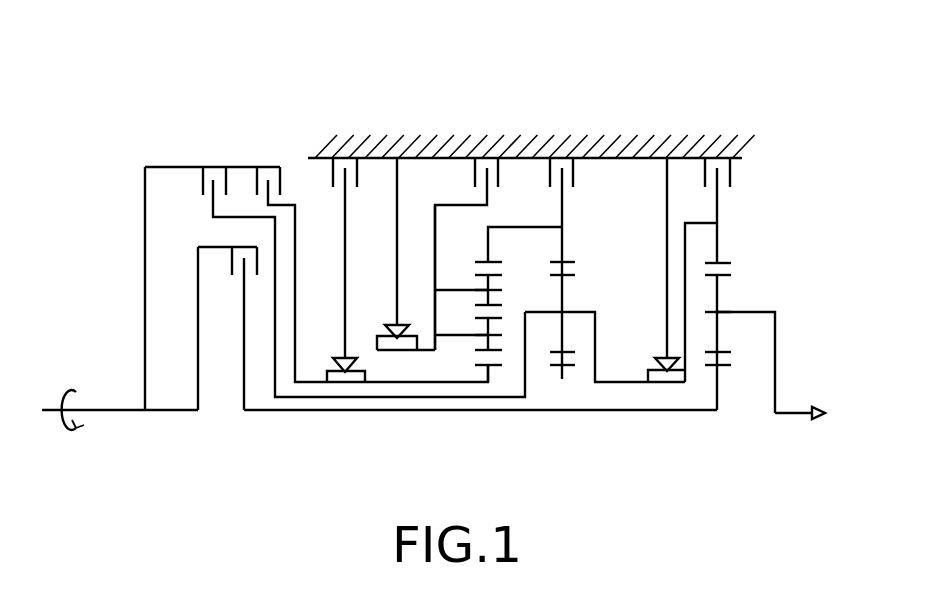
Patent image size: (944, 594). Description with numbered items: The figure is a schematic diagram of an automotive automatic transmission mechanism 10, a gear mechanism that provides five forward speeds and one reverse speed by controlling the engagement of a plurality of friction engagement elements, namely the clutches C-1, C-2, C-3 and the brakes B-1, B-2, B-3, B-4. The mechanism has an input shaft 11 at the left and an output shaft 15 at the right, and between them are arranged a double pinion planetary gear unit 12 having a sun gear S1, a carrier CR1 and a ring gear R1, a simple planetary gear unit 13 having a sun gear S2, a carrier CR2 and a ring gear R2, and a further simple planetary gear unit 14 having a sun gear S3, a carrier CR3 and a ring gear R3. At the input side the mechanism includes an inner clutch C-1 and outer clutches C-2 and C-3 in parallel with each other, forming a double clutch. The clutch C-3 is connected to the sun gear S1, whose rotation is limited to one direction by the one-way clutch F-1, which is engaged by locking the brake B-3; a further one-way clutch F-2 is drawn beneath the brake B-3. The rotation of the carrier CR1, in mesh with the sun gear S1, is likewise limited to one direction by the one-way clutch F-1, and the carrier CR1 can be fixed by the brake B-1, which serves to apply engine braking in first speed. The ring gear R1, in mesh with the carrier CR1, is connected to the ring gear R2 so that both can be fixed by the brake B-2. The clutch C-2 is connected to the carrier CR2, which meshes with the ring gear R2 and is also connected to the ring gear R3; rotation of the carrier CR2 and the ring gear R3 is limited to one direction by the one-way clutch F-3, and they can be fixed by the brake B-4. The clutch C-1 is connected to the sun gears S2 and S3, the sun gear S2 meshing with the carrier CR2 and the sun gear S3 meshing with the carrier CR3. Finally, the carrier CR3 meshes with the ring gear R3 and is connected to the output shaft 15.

The automatic transmission mechanism 10 is at (255, 70).
The input shaft 11 is at (115, 408).
The double pinion planetary gear unit 12 is at (497, 217).
The simple planetary gear unit 13 is at (570, 217).
The simple planetary gear unit 14 is at (728, 217).
The output shaft 15 is at (790, 411).
The inner clutch C-1 is at (229, 316).
The outer clutch C-2 is at (359, 269).
The outer clutch C-3 is at (368, 261).
The brake B-1 is at (470, 229).
The brake B-2 is at (561, 243).
The brake B-3 is at (346, 233).
The brake B-4 is at (719, 185).
The one-way clutch F-1 is at (406, 267).
The one-way clutch F-2 is at (333, 355).
The one-way clutch F-3 is at (666, 284).
The ring gear R1 is at (502, 263).
The ring gear R2 is at (575, 263).
The ring gear R3 is at (732, 264).
The sun gear S1 is at (486, 366).
The sun gear S2 is at (579, 381).
The sun gear S3 is at (730, 367).
The carrier CR1 is at (420, 282).
The carrier CR2 is at (584, 311).
The carrier CR3 is at (749, 311).